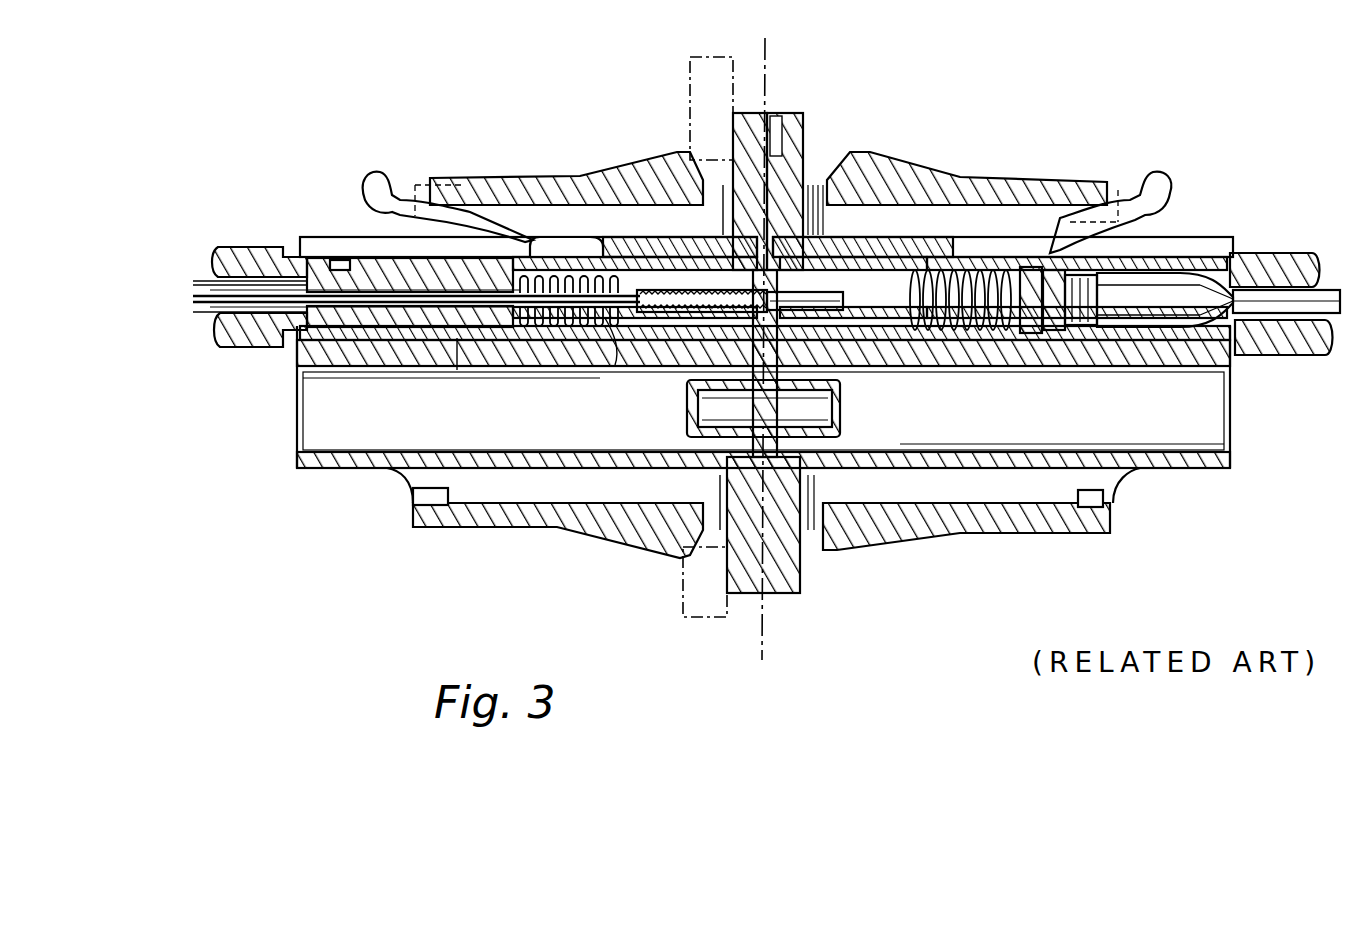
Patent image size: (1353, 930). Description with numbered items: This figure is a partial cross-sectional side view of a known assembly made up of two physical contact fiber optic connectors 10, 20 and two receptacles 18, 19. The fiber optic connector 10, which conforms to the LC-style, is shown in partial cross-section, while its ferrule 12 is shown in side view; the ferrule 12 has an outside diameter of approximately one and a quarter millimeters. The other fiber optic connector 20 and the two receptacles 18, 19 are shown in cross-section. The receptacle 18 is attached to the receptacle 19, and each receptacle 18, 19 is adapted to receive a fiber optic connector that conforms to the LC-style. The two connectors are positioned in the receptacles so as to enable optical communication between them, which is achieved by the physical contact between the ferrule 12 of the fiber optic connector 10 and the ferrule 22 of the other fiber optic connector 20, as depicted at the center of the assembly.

The fiber optic connector 10 is at (1265, 250).
The ferrule 12 is at (808, 287).
The receptacle 18 is at (806, 130).
The receptacle 19 is at (745, 113).
The fiber optic connector 20 is at (247, 248).
The ferrule 22 is at (692, 328).